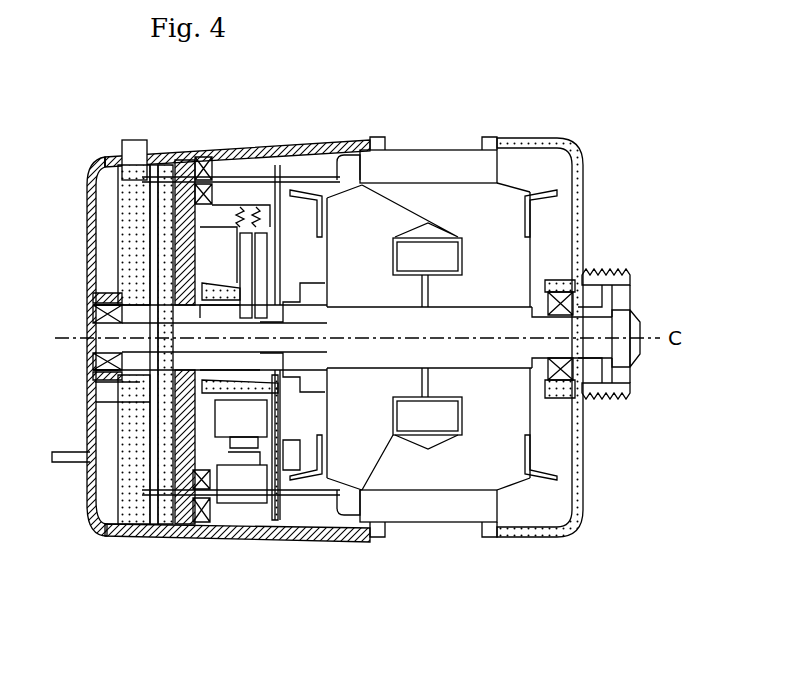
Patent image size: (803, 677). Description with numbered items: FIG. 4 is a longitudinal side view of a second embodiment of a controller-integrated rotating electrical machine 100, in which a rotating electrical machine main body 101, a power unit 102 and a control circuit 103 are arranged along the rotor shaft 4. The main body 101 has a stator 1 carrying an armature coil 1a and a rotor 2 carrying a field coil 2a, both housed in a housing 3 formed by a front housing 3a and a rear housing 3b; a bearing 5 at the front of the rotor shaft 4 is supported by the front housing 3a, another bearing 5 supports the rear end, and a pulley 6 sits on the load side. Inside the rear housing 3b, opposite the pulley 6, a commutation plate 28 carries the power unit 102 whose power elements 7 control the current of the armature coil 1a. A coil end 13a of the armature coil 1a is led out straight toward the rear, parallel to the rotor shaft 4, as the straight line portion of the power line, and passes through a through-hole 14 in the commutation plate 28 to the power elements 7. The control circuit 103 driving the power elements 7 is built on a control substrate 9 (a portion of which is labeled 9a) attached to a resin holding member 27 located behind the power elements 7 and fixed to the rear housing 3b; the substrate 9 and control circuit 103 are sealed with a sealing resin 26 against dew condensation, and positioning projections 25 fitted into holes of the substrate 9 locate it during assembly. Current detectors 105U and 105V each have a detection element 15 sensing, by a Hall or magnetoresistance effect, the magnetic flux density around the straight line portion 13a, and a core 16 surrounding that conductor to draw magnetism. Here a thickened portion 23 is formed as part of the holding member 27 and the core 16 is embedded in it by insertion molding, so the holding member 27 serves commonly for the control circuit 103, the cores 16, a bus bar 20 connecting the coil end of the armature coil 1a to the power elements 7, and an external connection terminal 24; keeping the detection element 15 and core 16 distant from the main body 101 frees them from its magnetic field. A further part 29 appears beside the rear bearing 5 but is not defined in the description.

The stator 1 is at (423, 162).
The armature coil 1a is at (505, 140).
The rotor 2 is at (442, 417).
The field coil 2a is at (455, 440).
The housing 3 is at (276, 142).
The front housing 3a is at (582, 195).
The rear housing 3b is at (292, 145).
The rotor shaft 4 is at (330, 372).
The bearing 5 is at (82, 303).
The pulley 6 is at (637, 277).
The power element 7 is at (302, 203).
The control substrate 9 is at (147, 402).
The lead wire terminal 9a is at (140, 383).
The coil end 13a is at (313, 165).
The through-hole 14 is at (290, 537).
The detection element 15 is at (175, 532).
The core 16 is at (213, 535).
The bus bar 20 is at (110, 530).
The thickened portion 23 is at (208, 162).
The external connection terminal 24 is at (78, 462).
The positioning projection 25 is at (128, 535).
The sealing resin 26 is at (122, 243).
The holding member 27 is at (180, 158).
The commutation plate 28 is at (280, 252).
The bearing retainer 29 is at (88, 368).
The controller-integrated rotating electrical machine 100 is at (400, 137).
The rotating electrical machine main body 101 is at (558, 137).
The power unit 102 is at (250, 537).
The control circuit 103 is at (117, 277).
The current detector 105U is at (185, 535).
The current detector 105V is at (200, 165).